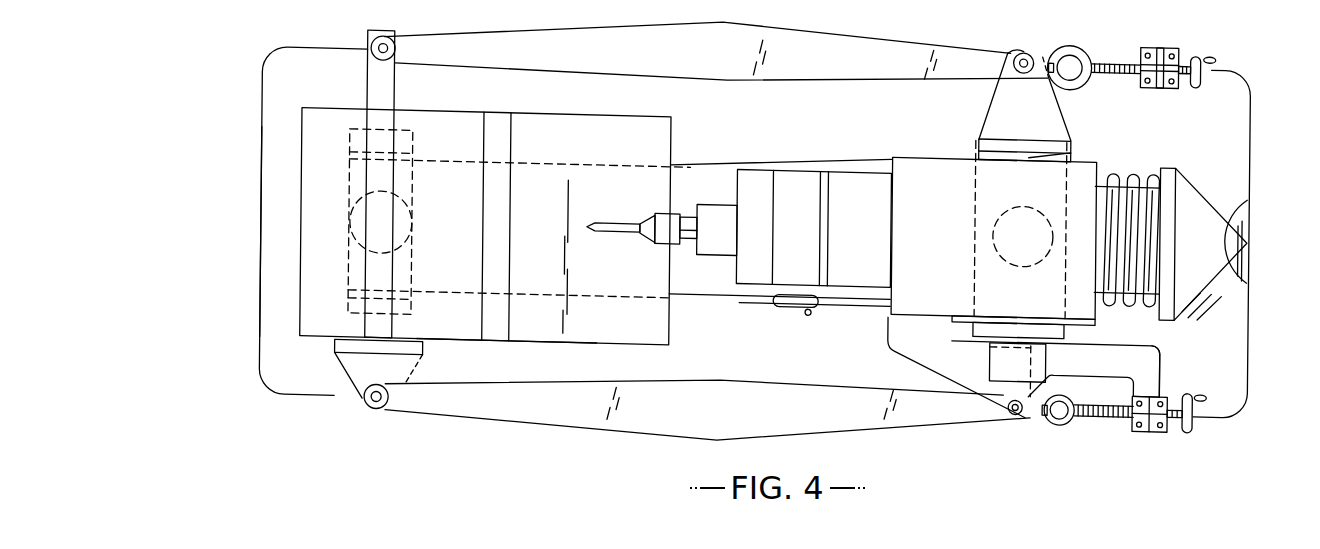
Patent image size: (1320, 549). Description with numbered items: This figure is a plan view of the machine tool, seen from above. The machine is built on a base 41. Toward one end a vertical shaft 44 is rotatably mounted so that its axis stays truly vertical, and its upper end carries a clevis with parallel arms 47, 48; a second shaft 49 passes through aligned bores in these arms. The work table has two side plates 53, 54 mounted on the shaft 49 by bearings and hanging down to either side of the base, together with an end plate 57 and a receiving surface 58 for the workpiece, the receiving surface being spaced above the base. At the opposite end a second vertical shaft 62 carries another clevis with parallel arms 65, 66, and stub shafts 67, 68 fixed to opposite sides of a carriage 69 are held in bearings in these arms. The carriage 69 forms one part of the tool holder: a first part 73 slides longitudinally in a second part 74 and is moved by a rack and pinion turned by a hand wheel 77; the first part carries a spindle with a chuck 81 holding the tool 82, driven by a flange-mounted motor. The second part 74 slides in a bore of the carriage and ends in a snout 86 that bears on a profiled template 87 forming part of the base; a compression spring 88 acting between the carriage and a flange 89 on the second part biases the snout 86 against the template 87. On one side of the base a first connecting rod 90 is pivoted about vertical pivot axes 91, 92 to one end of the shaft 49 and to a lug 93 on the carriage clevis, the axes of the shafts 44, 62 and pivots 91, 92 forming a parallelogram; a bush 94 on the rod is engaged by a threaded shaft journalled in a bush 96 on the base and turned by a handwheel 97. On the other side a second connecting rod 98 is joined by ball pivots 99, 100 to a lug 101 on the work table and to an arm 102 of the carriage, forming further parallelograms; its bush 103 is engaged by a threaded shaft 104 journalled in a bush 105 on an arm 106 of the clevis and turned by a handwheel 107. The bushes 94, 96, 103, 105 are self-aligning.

The base 41 is at (290, 387).
The vertical shaft 44 is at (362, 220).
The arm 47 is at (414, 297).
The arm 48 is at (414, 134).
The second shaft 49 is at (376, 72).
The side plate 53 is at (452, 329).
The side plate 54 is at (467, 100).
The end plate 57 is at (303, 292).
The receiving surface 58 is at (601, 270).
The vertical shaft 62 is at (992, 206).
The arm 65 is at (1100, 304).
The arm 66 is at (979, 118).
The stub shaft 67 is at (1006, 292).
The stub shaft 68 is at (1072, 124).
The carriage 69 is at (882, 286).
The first part of the tool holder 73 is at (722, 190).
The second part of the tool holder 74 is at (752, 266).
The hand wheel 77 is at (792, 288).
The chuck 81 is at (658, 222).
The tool 82 is at (600, 208).
The snout 86 is at (1227, 212).
The profiled template 87 is at (1249, 170).
The compression spring 88 is at (1100, 258).
The flange 89 is at (1162, 146).
The first connecting rod 90 is at (815, 18).
The vertical pivot axis 91 is at (388, 30).
The vertical pivot axis 92 is at (1026, 30).
The lug 93 is at (1040, 31).
The bush 94 is at (1082, 30).
The bush 96 is at (1153, 20).
The handwheel 97 is at (1196, 27).
The second connecting rod 98 is at (776, 421).
The ball pivot 99 is at (378, 399).
The ball pivot 100 is at (1027, 388).
The lug 101 is at (345, 342).
The arm 102 is at (893, 324).
The bush 103 is at (1075, 393).
The threaded shaft 104 is at (1110, 380).
The bush 105 is at (1164, 403).
The arm 106 is at (1166, 323).
The handwheel 107 is at (1208, 382).